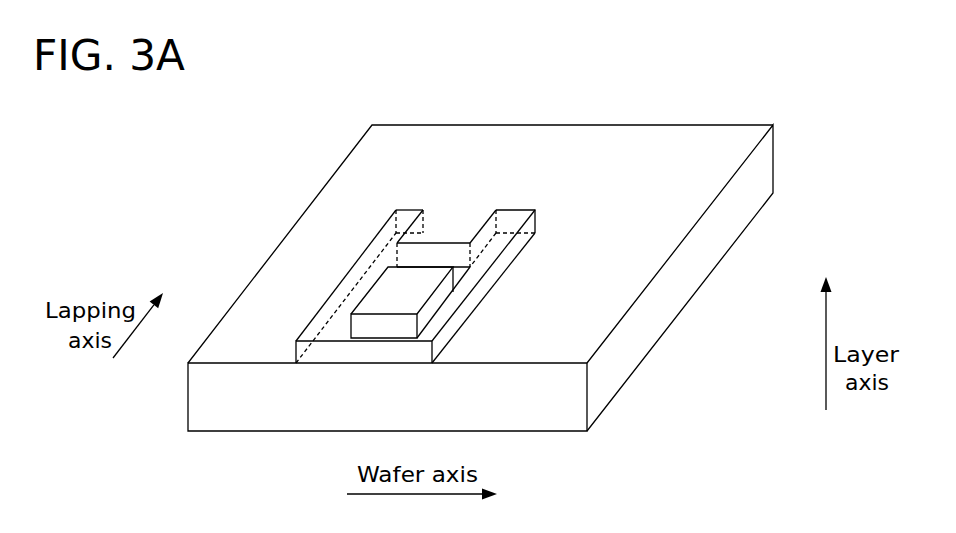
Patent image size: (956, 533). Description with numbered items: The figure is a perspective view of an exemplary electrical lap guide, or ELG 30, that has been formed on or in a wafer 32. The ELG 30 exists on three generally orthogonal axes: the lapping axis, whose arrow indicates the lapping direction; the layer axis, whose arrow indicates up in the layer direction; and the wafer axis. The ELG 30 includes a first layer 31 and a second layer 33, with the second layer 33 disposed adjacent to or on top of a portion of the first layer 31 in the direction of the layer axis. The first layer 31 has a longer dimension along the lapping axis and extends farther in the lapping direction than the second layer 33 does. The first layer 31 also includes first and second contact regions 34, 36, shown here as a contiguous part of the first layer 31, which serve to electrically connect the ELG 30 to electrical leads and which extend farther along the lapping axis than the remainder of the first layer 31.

The ELG 30 is at (550, 226).
The first layer 31 is at (465, 326).
The wafer 32 is at (655, 218).
The second layer 33 is at (438, 281).
The first contact region 34 is at (397, 209).
The second contact region 36 is at (497, 210).